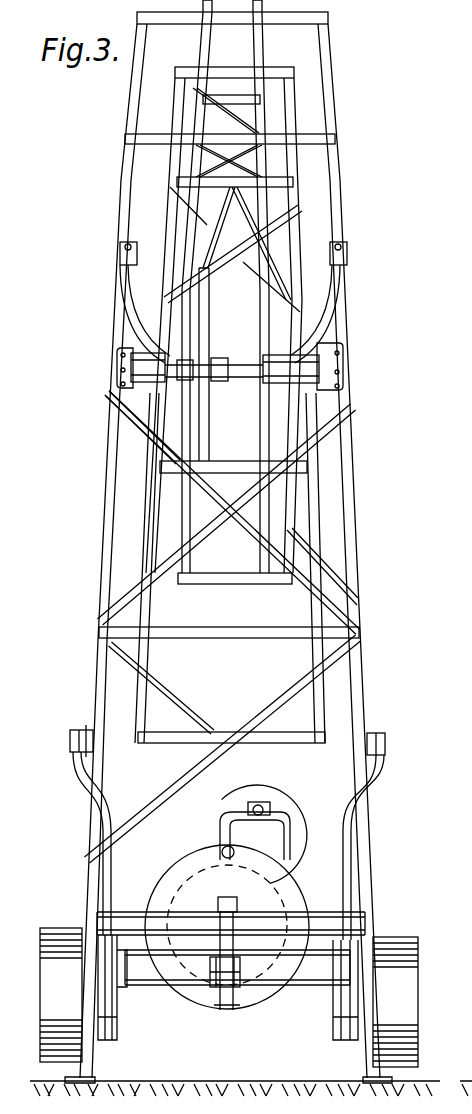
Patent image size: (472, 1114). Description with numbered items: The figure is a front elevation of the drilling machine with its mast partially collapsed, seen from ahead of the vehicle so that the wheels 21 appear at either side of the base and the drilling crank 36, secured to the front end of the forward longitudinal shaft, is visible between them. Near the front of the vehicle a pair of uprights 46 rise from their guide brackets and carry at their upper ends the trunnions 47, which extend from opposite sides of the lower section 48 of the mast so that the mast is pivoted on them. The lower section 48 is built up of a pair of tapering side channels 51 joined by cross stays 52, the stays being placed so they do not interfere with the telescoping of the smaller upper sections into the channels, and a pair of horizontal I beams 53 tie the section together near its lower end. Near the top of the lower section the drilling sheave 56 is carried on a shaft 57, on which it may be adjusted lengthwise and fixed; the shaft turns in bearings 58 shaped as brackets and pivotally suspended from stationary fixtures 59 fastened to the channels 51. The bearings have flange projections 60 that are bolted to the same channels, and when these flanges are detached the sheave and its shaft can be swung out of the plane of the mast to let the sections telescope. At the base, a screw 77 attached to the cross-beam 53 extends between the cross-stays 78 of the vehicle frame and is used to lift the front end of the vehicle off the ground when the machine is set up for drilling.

The wheels 21 is at (55, 927).
The drilling crank 36 is at (190, 862).
The uprights 46 is at (113, 820).
The trunnions 47 is at (90, 725).
The lower section of the mast 48 is at (352, 540).
The side channels 51 is at (122, 186).
The cross stays 52 is at (281, 718).
The horizontal I beams 53 is at (343, 927).
The drilling sheave 56 is at (207, 350).
The shaft 57 is at (232, 370).
The bearings 58 is at (146, 388).
The stationary fixtures 59 is at (120, 250).
The flange projections 60 is at (116, 366).
The screw 77 is at (240, 924).
The cross-stays 78 is at (247, 966).